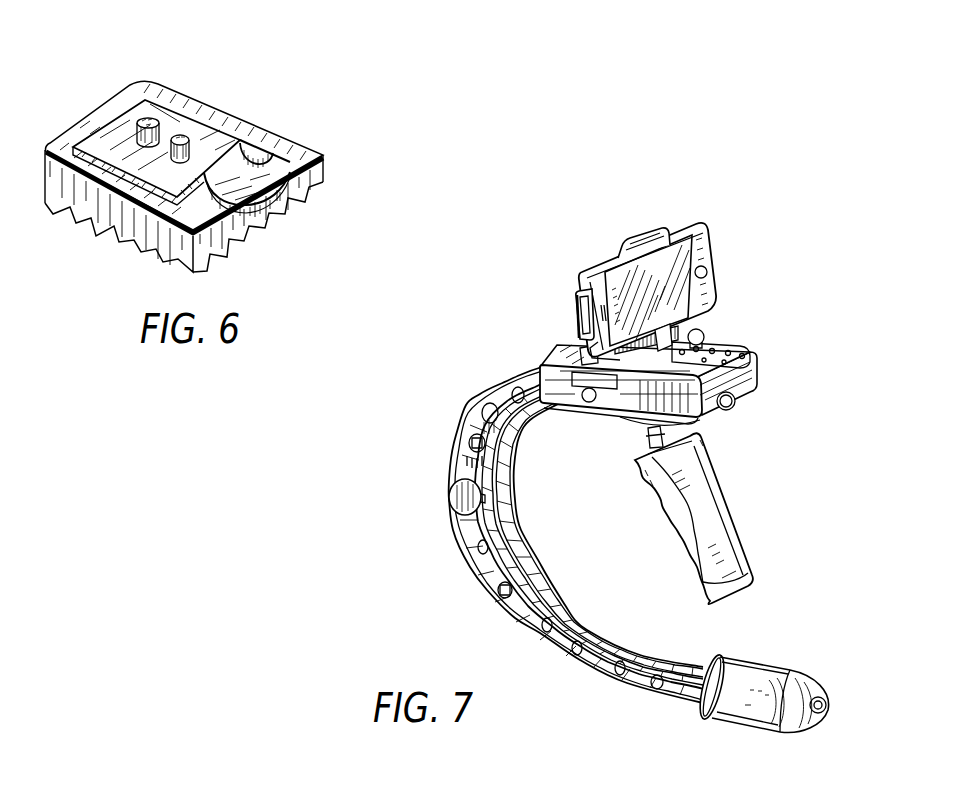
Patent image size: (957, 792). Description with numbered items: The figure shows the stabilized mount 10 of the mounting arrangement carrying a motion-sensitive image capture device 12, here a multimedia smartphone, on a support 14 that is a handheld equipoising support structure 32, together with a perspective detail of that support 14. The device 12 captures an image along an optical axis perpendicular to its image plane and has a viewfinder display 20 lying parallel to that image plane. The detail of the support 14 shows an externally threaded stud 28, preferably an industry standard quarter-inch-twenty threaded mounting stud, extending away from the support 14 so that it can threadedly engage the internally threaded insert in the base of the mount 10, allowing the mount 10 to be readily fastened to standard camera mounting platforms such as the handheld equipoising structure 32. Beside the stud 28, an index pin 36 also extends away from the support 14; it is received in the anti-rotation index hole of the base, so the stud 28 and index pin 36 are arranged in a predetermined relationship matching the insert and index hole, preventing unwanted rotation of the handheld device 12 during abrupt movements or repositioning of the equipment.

In FIG. 7, the stabilized mount 10 is at (641, 238).
In FIG. 7, the image capture device 12 is at (578, 272).
In FIG. 6, the support 14 is at (118, 128).
In FIG. 7, the support 14 is at (733, 341).
In FIG. 7, the viewfinder display 20 is at (683, 240).
In FIG. 6, the externally threaded stud 28 is at (150, 117).
In FIG. 7, the handheld equipoising support structure 32 is at (460, 431).
In FIG. 6, the index pin 36 is at (190, 135).